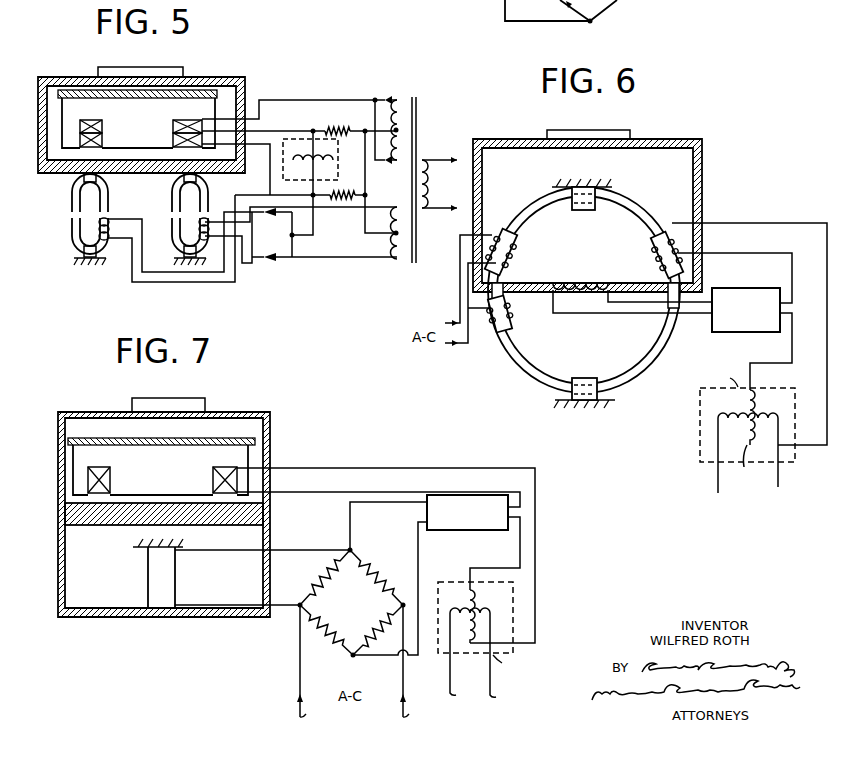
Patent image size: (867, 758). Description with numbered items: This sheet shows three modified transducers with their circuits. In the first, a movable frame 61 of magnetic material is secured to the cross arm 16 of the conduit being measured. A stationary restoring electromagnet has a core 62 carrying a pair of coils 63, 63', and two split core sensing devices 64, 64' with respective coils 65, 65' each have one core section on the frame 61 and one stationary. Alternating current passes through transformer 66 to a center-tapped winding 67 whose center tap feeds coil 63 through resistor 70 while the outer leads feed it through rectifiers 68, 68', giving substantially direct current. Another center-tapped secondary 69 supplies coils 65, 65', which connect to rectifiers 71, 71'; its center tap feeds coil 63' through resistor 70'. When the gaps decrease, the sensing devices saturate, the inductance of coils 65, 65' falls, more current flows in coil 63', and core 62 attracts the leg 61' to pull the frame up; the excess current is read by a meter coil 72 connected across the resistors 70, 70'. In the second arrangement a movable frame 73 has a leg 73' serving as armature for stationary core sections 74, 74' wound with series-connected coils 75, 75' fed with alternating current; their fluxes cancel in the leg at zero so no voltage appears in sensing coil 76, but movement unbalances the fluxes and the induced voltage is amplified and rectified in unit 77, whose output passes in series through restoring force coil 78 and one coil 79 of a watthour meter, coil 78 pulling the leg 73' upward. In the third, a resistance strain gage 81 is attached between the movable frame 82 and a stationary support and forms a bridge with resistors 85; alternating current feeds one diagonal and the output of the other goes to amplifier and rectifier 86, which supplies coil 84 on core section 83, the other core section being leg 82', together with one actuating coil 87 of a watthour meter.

In FIG. 5, the cross arm 16 is at (152, 53).
In FIG. 6, the cross arm 16 is at (577, 130).
In FIG. 7, the cross arm 16 is at (183, 398).
In FIG. 5, the movable frame 61 is at (141, 111).
In FIG. 5, the leg of magnetic frame 61' is at (154, 186).
In FIG. 5, the core 62 is at (208, 112).
In FIG. 5, the coil 63 is at (141, 119).
In FIG. 5, the coil 63' is at (141, 136).
In FIG. 5, the split core sensing device 64 is at (104, 219).
In FIG. 5, the split core sensing device 64' is at (208, 219).
In FIG. 5, the coil 65 is at (118, 230).
In FIG. 5, the coil 65' is at (213, 242).
In FIG. 5, the transformer 66 is at (424, 148).
In FIG. 5, the center-tapped winding 67 is at (412, 100).
In FIG. 5, the rectifier 68 is at (393, 87).
In FIG. 5, the rectifier 68' is at (383, 174).
In FIG. 5, the center-tapped secondary 69 is at (407, 263).
In FIG. 5, the resistor 70 is at (334, 120).
In FIG. 5, the resistor 70' is at (343, 210).
In FIG. 5, the rectifier 71 is at (274, 224).
In FIG. 5, the rectifier 71' is at (281, 269).
In FIG. 5, the meter coil 72 is at (330, 152).
In FIG. 6, the frame 73 is at (587, 202).
In FIG. 6, the leg 73' is at (545, 276).
In FIG. 6, the core section 74 is at (584, 290).
In FIG. 6, the core section 74' is at (546, 354).
In FIG. 6, the coil 75 is at (511, 252).
In FIG. 6, the coil 75' is at (514, 313).
In FIG. 6, the sensing coil 76 is at (577, 282).
In FIG. 6, the amplifier and rectifier unit 77 is at (730, 288).
In FIG. 6, the restoring force coil 78 is at (655, 248).
In FIG. 6, the watthour meter coil 79 is at (747, 460).
In FIG. 7, the resistance strain gage 81 is at (153, 565).
In FIG. 7, the movable frame 82 is at (187, 514).
In FIG. 7, the leg 82' is at (189, 514).
In FIG. 7, the core section 83 is at (245, 462).
In FIG. 7, the coil 84 is at (213, 472).
In FIG. 7, the resistors 85 is at (335, 612).
In FIG. 7, the amplifier and rectifier 86 is at (442, 530).
In FIG. 7, the actuating coil 87 is at (477, 603).